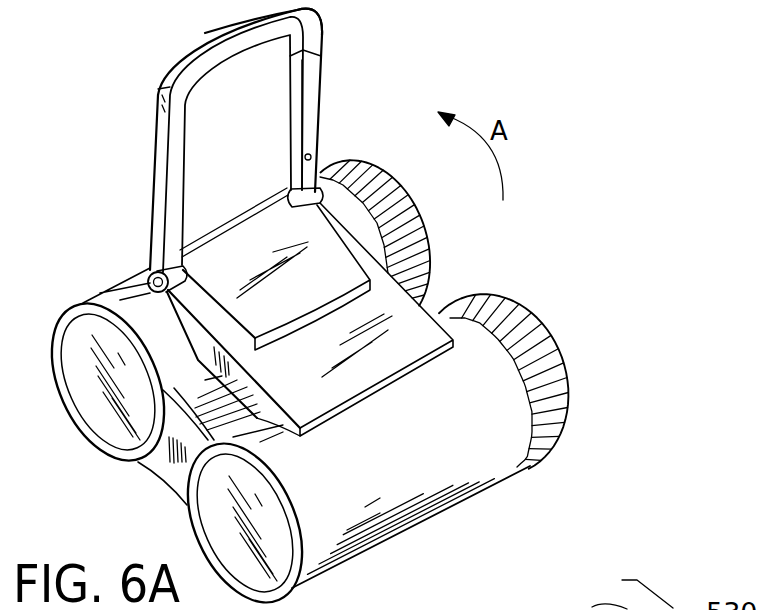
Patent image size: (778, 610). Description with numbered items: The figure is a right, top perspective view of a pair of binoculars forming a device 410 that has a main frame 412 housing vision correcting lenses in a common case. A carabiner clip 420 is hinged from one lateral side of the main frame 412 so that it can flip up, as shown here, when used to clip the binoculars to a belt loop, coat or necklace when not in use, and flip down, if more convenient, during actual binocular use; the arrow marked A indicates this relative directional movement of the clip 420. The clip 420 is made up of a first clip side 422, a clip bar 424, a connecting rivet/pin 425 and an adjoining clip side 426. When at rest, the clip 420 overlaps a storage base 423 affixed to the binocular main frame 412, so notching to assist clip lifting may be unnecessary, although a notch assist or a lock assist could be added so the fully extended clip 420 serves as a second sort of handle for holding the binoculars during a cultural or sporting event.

The device 410 is at (341, 385).
The main frame 412 is at (418, 449).
The carabiner clip 420 is at (243, 150).
The first clip side 422 is at (313, 41).
The storage base 423 is at (410, 323).
The clip bar 424 is at (313, 122).
The connecting rivet/pin 425 is at (311, 156).
The adjoining clip side 426 is at (243, 52).